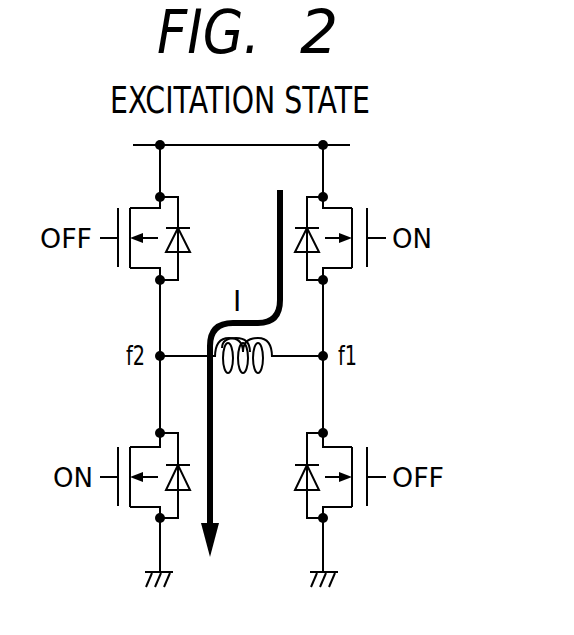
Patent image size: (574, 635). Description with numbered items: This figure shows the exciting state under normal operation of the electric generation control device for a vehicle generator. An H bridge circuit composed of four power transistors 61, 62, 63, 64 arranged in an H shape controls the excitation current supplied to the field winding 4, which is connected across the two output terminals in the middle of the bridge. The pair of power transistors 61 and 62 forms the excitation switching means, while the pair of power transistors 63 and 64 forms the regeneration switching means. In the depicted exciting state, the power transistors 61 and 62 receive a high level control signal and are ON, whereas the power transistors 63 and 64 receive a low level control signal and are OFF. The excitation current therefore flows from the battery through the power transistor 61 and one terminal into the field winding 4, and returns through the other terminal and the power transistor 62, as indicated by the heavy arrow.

The field winding 4 is at (265, 372).
The power transistor 61 is at (338, 207).
The power transistor 62 is at (146, 446).
The power transistor 63 is at (146, 207).
The power transistor 64 is at (338, 446).